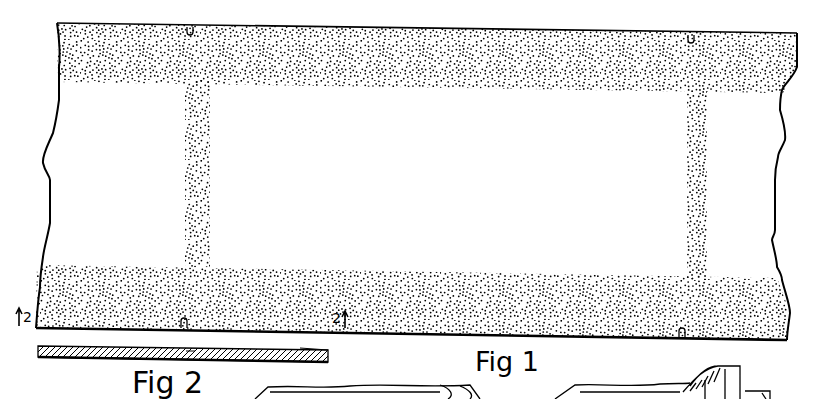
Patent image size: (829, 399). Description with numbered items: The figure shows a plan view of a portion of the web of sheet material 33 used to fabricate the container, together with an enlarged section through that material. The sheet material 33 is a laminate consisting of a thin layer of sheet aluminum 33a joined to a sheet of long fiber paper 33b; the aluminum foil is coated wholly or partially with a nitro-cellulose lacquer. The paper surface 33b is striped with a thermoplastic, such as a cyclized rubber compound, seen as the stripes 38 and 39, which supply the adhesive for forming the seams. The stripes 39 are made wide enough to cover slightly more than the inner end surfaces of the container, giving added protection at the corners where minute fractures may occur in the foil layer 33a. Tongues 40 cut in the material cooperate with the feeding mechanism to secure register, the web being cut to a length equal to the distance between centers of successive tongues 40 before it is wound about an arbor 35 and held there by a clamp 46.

In FIG. 1, the strip of sheet material 33 is at (585, 338).
In FIG. 2, the sheet aluminum layer 33a is at (263, 362).
In FIG. 1, the long fiber paper sheet 33b is at (490, 199).
In FIG. 2, the long fiber paper sheet 33b is at (315, 352).
In FIG. 1, the thermoplastic stripes 38 is at (202, 153).
In FIG. 1, the thermoplastic stripes 39 is at (387, 62).
In FIG. 1, the tongues 40 is at (186, 319).
In FIG. 2, the tongues 40 is at (190, 352).
In FIG. 2, the clamp 46 is at (384, 398).
In FIG. 2, the arbor 35 is at (607, 397).